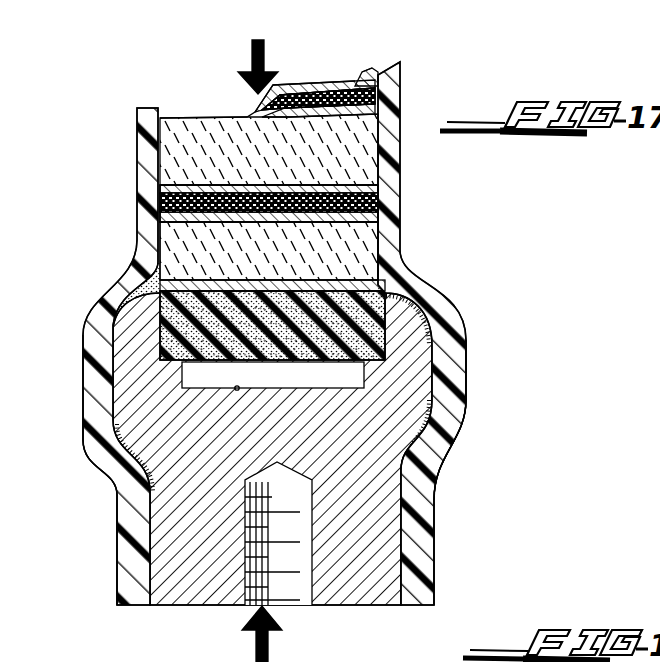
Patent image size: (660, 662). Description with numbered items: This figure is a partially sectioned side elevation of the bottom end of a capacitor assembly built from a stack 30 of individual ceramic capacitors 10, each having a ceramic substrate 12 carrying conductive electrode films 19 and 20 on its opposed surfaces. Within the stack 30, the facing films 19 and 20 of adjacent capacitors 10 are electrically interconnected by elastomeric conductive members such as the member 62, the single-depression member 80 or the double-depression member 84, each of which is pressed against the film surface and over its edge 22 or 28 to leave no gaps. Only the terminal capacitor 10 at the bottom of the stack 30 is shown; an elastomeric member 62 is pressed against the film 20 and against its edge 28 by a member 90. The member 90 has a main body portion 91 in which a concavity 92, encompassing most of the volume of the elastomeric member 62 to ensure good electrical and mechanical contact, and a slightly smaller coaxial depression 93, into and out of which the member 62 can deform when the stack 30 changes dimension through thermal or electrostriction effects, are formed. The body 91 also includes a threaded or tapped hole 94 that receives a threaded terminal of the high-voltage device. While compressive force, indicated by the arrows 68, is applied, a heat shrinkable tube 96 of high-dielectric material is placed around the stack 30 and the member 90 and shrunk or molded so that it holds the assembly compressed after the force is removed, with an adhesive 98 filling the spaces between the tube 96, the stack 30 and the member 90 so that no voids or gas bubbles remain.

The ceramic capacitor 10 is at (400, 162).
The ceramic substrate 12 is at (170, 148).
The film 19 is at (388, 130).
The film 20 is at (400, 78).
The edge of the film 22 is at (148, 220).
The edge of the film 28 is at (152, 200).
The stack 30 is at (214, 70).
The elastomeric conductive member 62 is at (448, 328).
The arrows 68 is at (266, 58).
The elastomeric member 80 is at (403, 101).
The elastomeric member 84 is at (404, 201).
The member 90 is at (455, 418).
The main body portion 91 is at (420, 372).
The concavity 92 is at (176, 370).
The depression 93 is at (238, 390).
The threaded or tapped hole 94 is at (305, 550).
The heat shrinkable tube 96 is at (132, 553).
The adhesive 98 is at (140, 262).